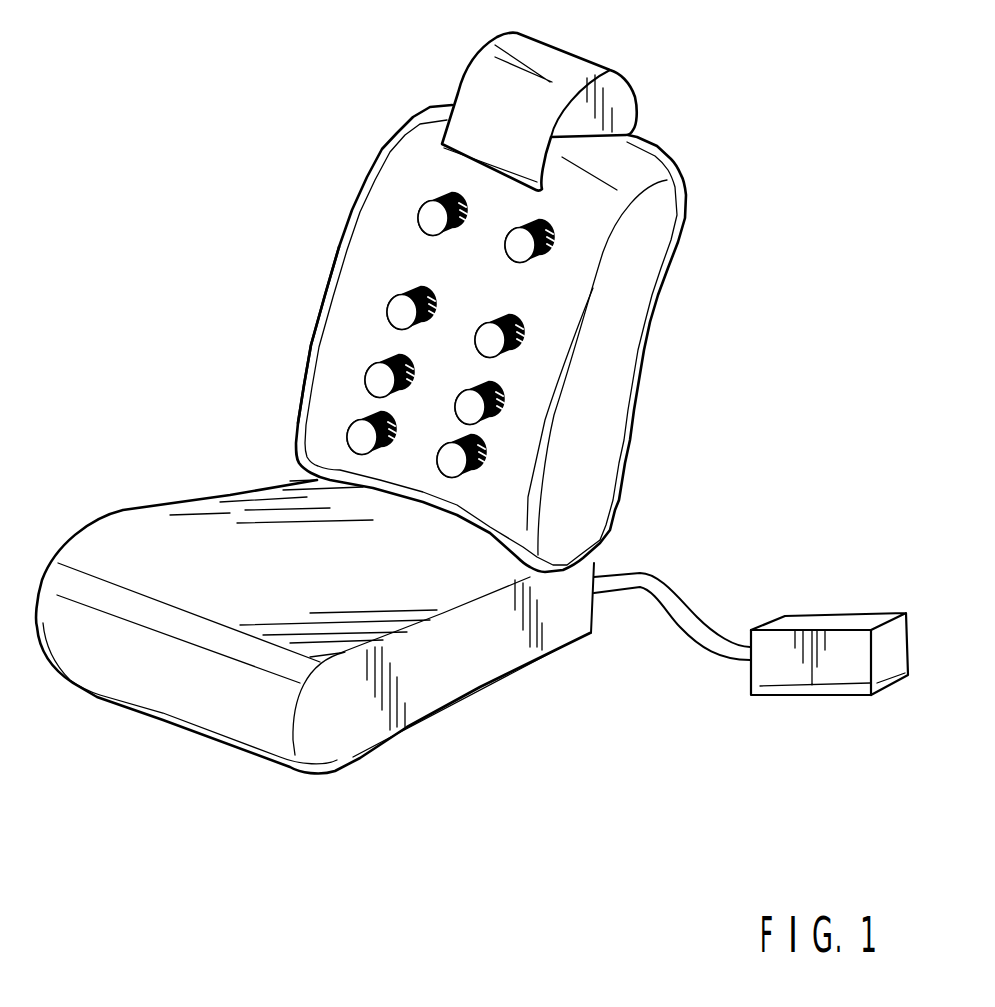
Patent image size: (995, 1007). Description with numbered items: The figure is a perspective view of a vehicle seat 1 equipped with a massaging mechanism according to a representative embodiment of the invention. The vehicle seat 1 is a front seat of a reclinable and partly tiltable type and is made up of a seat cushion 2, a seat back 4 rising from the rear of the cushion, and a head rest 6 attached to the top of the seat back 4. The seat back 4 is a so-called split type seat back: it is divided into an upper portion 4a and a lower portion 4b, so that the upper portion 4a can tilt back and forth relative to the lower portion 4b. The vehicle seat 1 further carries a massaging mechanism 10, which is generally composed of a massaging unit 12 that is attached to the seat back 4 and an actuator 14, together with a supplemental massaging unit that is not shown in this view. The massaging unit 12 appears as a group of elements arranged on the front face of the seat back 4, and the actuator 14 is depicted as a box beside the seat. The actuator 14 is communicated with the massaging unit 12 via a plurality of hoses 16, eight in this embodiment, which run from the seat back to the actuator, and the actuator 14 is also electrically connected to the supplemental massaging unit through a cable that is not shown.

The vehicle seat 1 is at (603, 820).
The seat cushion 2 is at (200, 538).
The seat back 4 is at (340, 300).
The upper portion 4a is at (378, 151).
The lower portion 4b is at (305, 359).
The head rest 6 is at (477, 62).
The massaging mechanism 10 is at (893, 503).
The massaging unit 12 is at (545, 252).
The actuator 14 is at (828, 610).
The hoses 16 is at (693, 612).